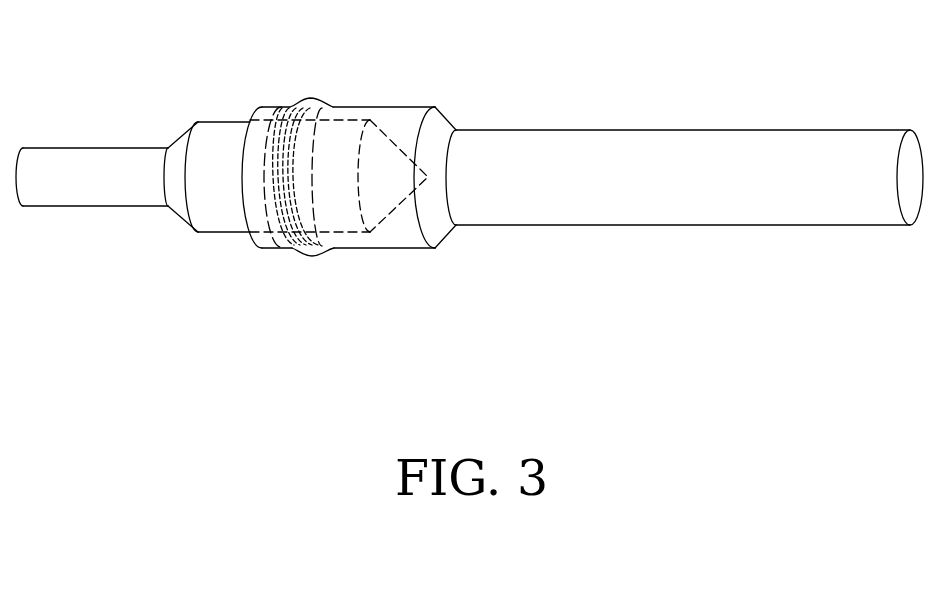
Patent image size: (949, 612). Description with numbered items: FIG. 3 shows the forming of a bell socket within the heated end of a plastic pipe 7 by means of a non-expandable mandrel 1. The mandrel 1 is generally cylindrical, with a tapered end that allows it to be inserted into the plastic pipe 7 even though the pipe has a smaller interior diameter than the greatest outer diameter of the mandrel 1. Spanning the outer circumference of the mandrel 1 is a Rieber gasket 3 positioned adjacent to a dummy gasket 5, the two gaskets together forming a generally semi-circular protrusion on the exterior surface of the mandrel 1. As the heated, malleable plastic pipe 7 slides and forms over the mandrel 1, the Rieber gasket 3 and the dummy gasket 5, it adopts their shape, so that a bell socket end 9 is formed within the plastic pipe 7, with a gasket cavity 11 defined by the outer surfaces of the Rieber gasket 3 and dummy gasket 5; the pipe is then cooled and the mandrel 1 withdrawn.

The non-expandable mandrel 1 is at (198, 120).
The Rieber gasket 3 is at (320, 246).
The dummy gasket 5 is at (293, 246).
The plastic pipe 7 is at (638, 122).
The bell socket end 9 is at (377, 103).
The gasket cavity 11 is at (310, 97).